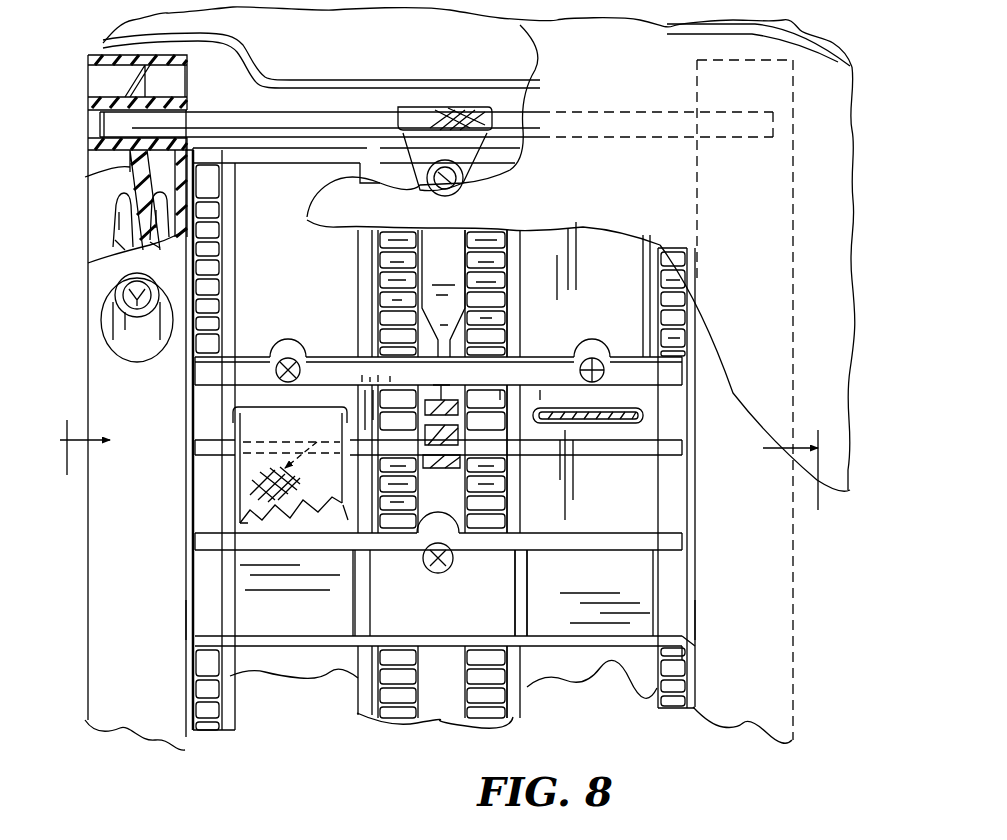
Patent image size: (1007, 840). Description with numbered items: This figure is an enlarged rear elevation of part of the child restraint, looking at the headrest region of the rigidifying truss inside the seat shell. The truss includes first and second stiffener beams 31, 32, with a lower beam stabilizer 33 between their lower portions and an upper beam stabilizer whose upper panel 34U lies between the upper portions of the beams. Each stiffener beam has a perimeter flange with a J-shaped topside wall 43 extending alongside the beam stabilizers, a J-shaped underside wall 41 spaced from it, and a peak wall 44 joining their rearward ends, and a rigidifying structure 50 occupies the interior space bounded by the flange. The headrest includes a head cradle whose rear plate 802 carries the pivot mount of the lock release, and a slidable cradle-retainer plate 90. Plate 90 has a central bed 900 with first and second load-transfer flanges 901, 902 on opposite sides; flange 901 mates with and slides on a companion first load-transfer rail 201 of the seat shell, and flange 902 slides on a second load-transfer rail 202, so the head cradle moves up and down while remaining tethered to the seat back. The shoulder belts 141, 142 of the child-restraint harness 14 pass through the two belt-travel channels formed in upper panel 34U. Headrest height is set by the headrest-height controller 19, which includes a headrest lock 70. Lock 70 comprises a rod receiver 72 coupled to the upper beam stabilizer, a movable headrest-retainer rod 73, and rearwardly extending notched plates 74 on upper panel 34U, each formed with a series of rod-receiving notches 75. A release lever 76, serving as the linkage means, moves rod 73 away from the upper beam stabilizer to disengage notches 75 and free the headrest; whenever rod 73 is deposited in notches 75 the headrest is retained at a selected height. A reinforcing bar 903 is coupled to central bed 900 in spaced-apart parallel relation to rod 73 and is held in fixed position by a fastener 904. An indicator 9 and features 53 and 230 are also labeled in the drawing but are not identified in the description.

The section line 9- 9 is at (442, 449).
The child-restraint harness 14 is at (234, 494).
The headrest-height controller 19 is at (619, 256).
The first stiffener beam 31 is at (84, 96).
The second stiffener beam 32 is at (772, 60).
The lower beam stabilizer 33 is at (440, 727).
The upper panel 34U is at (263, 147).
The J-shaped underside wall 41 is at (137, 423).
The J-shaped topside wall 43 is at (104, 200).
The peak wall 44 is at (140, 52).
The rigidifying structure 50 is at (107, 228).
The hatched seal 53 is at (130, 170).
The headrest lock 70 is at (745, 445).
The rod receiver 72 is at (360, 262).
The headrest-retainer rod 73 is at (230, 437).
The notched plate 74 is at (240, 301).
The rod-receiving notches 75 is at (213, 248).
The release lever 76 is at (446, 235).
The slidable cradle-retainer plate 90 is at (283, 656).
The shoulder belt 141 is at (318, 500).
The shoulder belt 142 is at (600, 425).
The first load-transfer rail 201 is at (208, 188).
The second load-transfer rail 202 is at (673, 275).
The strip 230 is at (277, 102).
The rear plate 802 is at (248, 330).
The central bed 900 is at (500, 603).
The first load-transfer flange 901 is at (212, 565).
The second load-transfer flange 902 is at (694, 623).
The reinforcing bar 903 is at (690, 600).
The fastener 904 is at (420, 565).